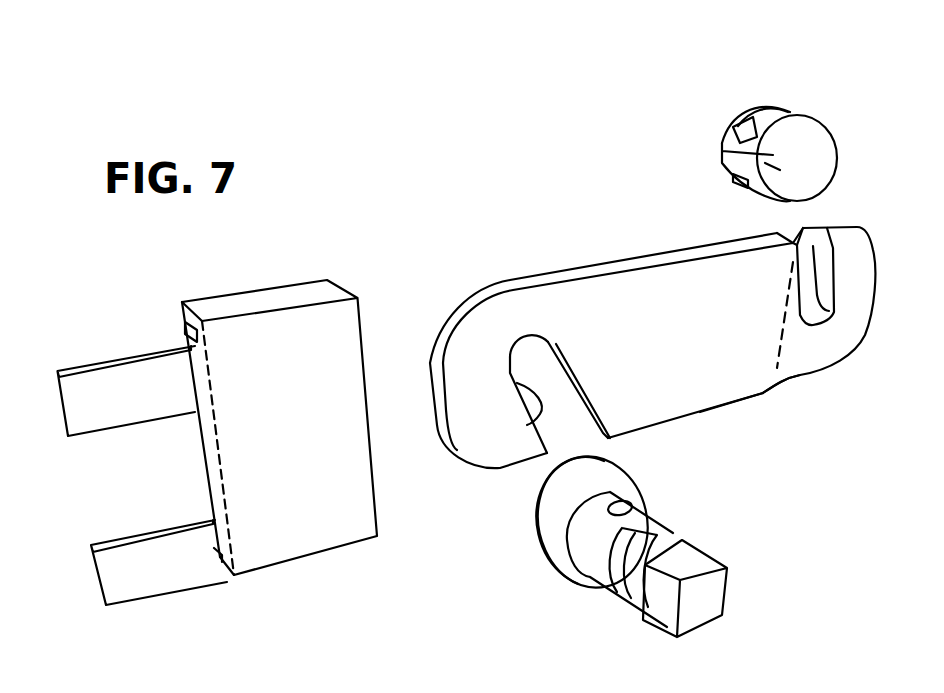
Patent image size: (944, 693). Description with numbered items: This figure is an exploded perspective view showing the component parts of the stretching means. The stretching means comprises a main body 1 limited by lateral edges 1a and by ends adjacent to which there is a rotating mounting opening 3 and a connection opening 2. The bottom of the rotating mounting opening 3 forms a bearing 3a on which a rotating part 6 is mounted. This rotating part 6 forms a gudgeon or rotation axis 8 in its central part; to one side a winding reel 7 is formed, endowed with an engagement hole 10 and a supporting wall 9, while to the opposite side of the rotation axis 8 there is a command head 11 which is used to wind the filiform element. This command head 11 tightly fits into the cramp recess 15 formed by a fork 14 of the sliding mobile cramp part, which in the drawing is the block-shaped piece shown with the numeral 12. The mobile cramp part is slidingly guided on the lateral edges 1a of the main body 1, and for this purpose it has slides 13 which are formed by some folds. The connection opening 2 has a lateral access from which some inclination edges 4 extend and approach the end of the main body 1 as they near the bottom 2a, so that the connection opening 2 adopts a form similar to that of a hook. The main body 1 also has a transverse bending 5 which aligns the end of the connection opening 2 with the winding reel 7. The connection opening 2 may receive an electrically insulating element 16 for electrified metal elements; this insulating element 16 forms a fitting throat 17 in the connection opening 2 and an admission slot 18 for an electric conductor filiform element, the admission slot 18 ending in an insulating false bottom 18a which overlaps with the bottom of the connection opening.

The main body 1 is at (624, 239).
The lateral edges 1a is at (663, 255).
The connection opening 2 is at (805, 266).
The bottom 2a is at (833, 315).
The rotating mounting opening 3 is at (526, 371).
The bearing 3a is at (517, 355).
The inclination edges 4 is at (538, 415).
The transverse bending 5 is at (780, 373).
The rotating part 6 is at (714, 525).
The winding reel 7 is at (571, 566).
The rotation axis 8 is at (620, 588).
The supporting wall 9 is at (555, 546).
The engagement hole 10 is at (627, 507).
The command head 11 is at (727, 578).
The block 12 is at (283, 269).
The slides 13 is at (188, 328).
The fork 14 is at (86, 398).
The cramp recess 15 is at (143, 491).
The electrically insulating element 16 is at (803, 79).
The fitting throat 17 is at (748, 127).
The admission slot 18 is at (740, 161).
The insulating false bottom 18a is at (782, 168).